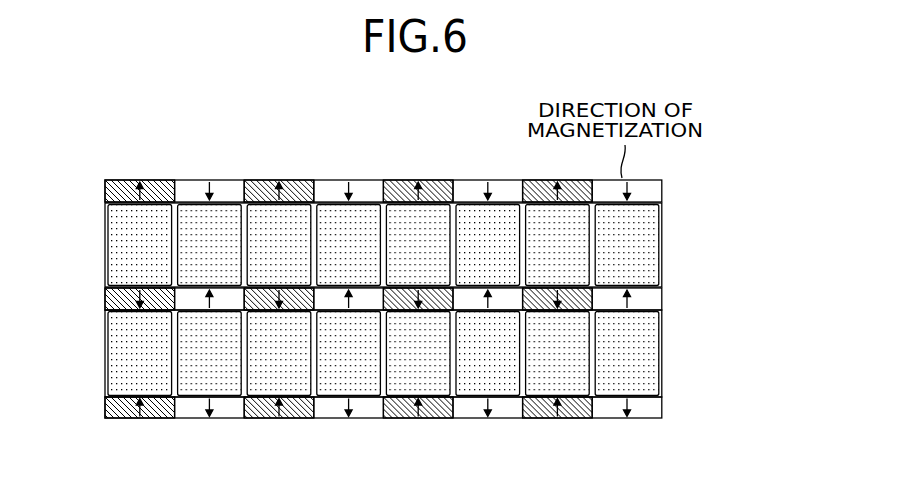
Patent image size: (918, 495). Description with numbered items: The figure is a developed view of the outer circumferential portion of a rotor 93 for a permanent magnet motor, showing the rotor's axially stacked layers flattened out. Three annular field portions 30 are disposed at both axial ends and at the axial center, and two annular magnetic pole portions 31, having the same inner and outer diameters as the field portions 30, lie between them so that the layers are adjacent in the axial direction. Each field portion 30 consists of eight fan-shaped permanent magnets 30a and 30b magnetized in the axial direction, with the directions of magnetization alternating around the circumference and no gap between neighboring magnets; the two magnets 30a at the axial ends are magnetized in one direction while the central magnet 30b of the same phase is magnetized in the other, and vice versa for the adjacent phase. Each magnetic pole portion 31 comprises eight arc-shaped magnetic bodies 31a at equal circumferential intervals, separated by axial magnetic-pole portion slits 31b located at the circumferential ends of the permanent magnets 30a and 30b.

The field portion 30 is at (100, 180).
The permanent magnet 30a is at (262, 298).
The permanent magnet 30b is at (289, 180).
The magnetic pole portion 31 is at (100, 203).
The magnetic body 31a is at (648, 385).
The magnetic-pole portion slit 31b is at (445, 387).
The rotor 93 is at (705, 159).